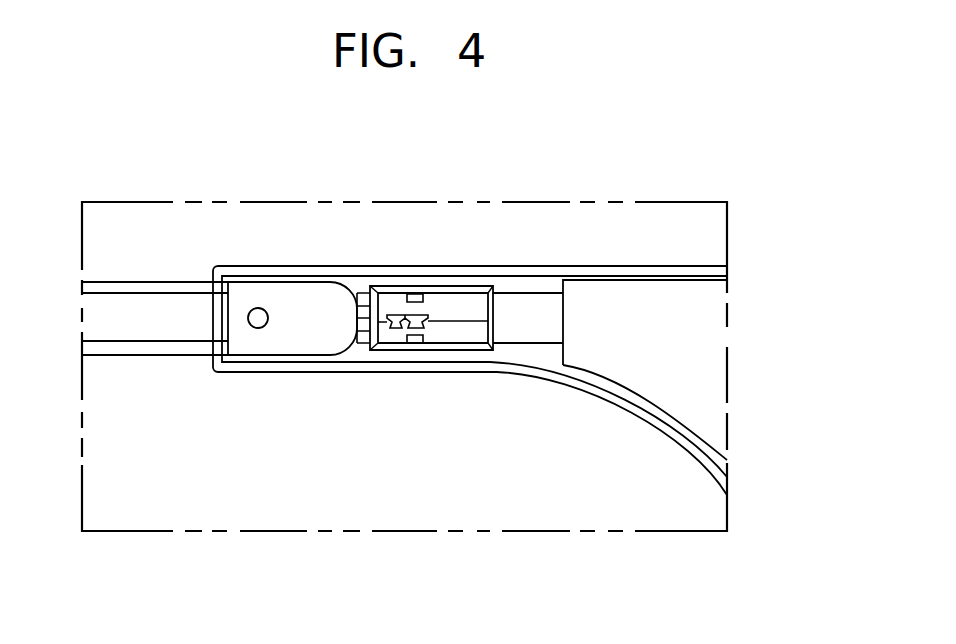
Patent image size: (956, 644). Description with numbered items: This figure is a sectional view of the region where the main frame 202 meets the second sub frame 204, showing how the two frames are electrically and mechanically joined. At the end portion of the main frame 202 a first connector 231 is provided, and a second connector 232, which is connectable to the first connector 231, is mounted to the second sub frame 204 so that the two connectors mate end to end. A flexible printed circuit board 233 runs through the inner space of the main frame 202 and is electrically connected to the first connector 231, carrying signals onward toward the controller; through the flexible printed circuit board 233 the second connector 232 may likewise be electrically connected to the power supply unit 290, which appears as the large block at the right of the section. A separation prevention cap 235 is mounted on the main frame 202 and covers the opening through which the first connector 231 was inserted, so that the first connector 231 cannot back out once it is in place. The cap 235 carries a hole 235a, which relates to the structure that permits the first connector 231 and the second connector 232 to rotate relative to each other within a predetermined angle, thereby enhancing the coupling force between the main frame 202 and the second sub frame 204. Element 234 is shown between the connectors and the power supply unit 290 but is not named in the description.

The main frame 202 is at (118, 286).
The second sub frame 204 is at (315, 266).
The first connector 231 is at (363, 325).
The second connector 232 is at (438, 335).
The flexible printed circuit board 233 is at (183, 327).
The cable 234 is at (523, 327).
The separation prevention cap 235 is at (303, 327).
The hole 235a is at (249, 312).
The power supply unit 290 is at (710, 333).